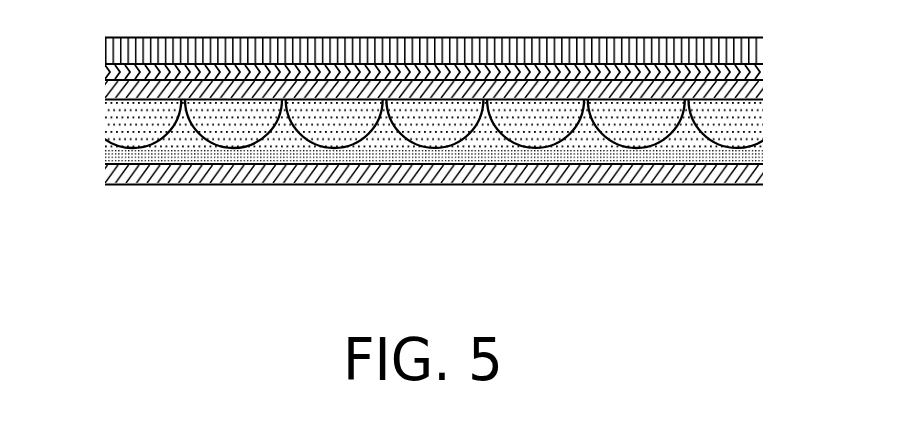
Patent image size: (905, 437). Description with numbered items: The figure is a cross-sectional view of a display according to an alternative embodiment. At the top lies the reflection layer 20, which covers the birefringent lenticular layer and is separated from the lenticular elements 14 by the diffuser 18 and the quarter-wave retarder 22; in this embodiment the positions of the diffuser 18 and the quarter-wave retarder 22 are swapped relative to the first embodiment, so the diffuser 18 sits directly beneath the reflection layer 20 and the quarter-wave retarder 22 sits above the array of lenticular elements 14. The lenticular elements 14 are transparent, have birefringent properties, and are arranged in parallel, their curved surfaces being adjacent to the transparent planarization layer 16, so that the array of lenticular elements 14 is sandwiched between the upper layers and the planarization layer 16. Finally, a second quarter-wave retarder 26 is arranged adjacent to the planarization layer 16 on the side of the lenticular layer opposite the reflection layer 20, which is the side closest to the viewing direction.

The reflection layer 20 is at (758, 50).
The diffuser 18 is at (110, 73).
The quarter-wave retarder 22 is at (760, 97).
The lenticular elements 14 is at (110, 127).
The planarization layer 16 is at (753, 156).
The second quarter-wave retarder 26 is at (149, 172).